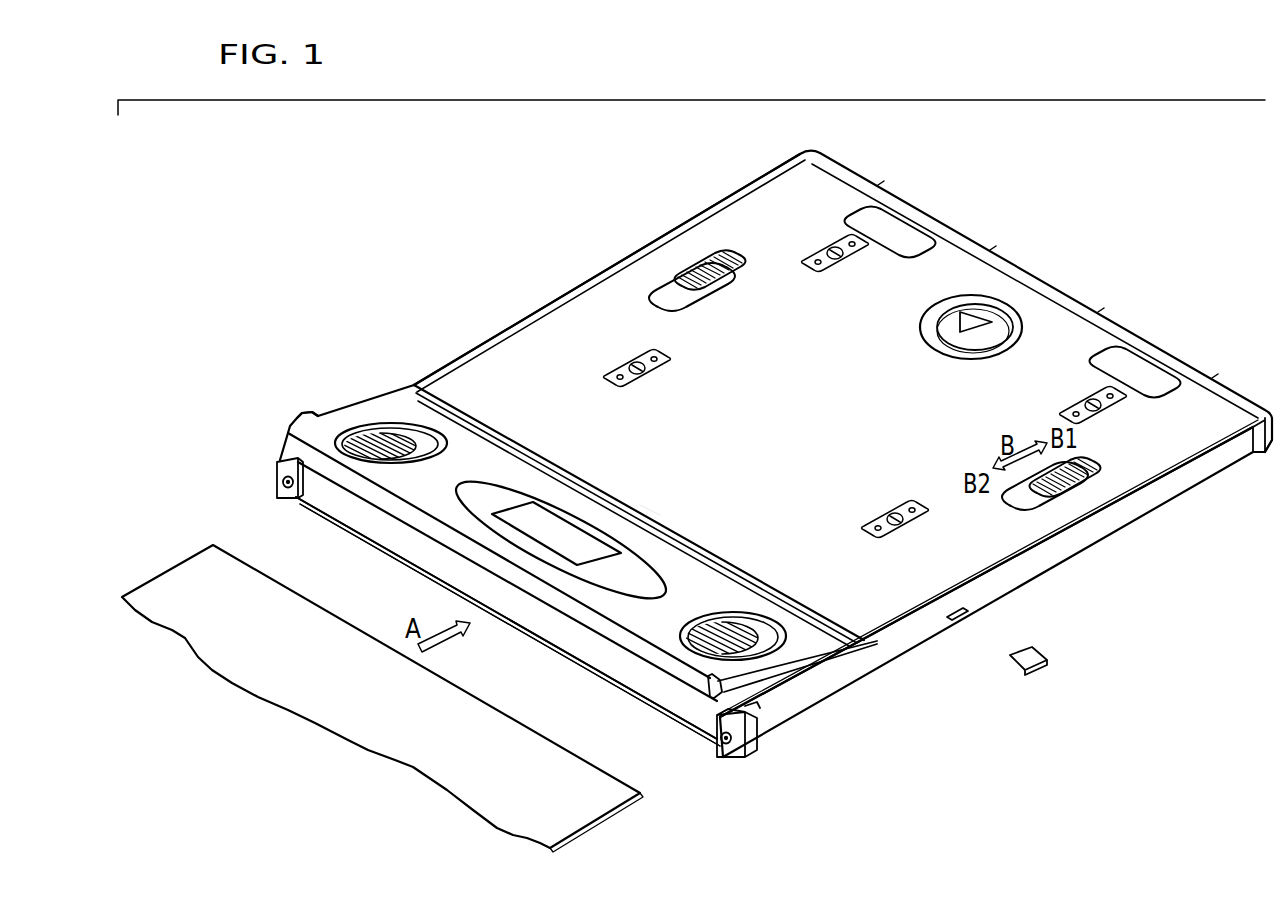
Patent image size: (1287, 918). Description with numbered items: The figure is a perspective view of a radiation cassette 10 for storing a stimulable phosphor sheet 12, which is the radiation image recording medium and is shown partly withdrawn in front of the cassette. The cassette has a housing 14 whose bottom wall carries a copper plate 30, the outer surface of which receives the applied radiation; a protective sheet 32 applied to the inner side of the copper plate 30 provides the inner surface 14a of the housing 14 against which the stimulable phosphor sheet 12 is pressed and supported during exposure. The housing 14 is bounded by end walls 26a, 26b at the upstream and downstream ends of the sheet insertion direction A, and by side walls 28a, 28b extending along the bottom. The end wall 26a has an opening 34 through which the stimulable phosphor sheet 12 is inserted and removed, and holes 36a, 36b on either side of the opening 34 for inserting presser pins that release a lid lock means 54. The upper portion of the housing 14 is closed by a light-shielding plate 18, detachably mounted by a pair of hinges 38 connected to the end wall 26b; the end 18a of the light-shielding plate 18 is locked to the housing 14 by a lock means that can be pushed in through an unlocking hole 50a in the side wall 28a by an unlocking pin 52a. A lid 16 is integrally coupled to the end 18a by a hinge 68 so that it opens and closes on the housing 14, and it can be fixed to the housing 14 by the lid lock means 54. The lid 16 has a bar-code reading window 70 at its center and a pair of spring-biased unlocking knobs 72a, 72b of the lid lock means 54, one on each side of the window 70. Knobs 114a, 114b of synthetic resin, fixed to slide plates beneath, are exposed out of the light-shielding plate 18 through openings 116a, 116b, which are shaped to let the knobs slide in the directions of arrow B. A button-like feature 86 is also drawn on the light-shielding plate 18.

The radiation cassette 10 is at (492, 216).
The stimulable phosphor sheet 12 is at (180, 580).
The housing 14 is at (1152, 517).
The inner surface of the housing 14a is at (765, 697).
The lid 16 is at (683, 558).
The light-shielding plate 18 is at (1048, 318).
The end of the light-shielding plate 18a is at (648, 522).
The end wall 26a is at (735, 757).
The end wall 26b is at (1225, 392).
The side wall 28a is at (1083, 545).
The side wall 28b is at (553, 303).
The copper plate 30 is at (557, 655).
The protective sheet 32 is at (393, 562).
The opening 34 is at (618, 670).
The hole 36a is at (717, 742).
The hole 36b is at (278, 480).
The hinges 38 is at (930, 220).
The unlocking hole 50a is at (1045, 637).
The unlocking pin 52a is at (1025, 670).
The lid lock means 54 is at (352, 432).
The hinge 68 is at (518, 415).
The bar-code reading window 70 is at (543, 520).
The unlocking knob 72a is at (742, 632).
The unlocking knob 72b is at (373, 432).
The button 86 is at (1105, 480).
The knob 114a is at (1083, 467).
The knob 114b is at (725, 262).
The opening 116a is at (1030, 507).
The opening 116b is at (734, 357).